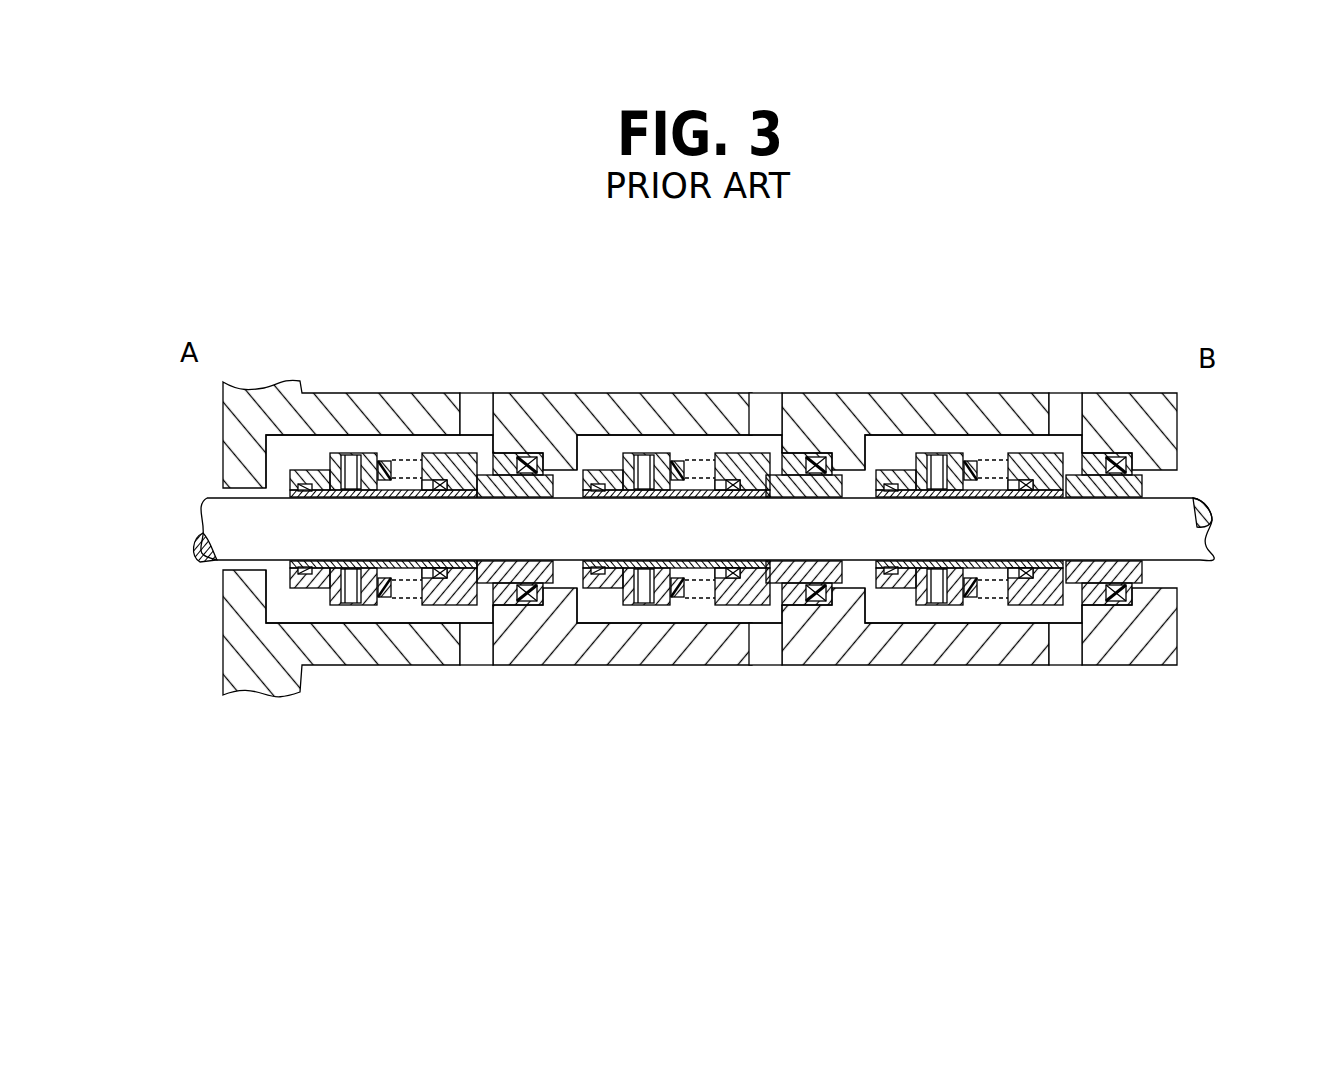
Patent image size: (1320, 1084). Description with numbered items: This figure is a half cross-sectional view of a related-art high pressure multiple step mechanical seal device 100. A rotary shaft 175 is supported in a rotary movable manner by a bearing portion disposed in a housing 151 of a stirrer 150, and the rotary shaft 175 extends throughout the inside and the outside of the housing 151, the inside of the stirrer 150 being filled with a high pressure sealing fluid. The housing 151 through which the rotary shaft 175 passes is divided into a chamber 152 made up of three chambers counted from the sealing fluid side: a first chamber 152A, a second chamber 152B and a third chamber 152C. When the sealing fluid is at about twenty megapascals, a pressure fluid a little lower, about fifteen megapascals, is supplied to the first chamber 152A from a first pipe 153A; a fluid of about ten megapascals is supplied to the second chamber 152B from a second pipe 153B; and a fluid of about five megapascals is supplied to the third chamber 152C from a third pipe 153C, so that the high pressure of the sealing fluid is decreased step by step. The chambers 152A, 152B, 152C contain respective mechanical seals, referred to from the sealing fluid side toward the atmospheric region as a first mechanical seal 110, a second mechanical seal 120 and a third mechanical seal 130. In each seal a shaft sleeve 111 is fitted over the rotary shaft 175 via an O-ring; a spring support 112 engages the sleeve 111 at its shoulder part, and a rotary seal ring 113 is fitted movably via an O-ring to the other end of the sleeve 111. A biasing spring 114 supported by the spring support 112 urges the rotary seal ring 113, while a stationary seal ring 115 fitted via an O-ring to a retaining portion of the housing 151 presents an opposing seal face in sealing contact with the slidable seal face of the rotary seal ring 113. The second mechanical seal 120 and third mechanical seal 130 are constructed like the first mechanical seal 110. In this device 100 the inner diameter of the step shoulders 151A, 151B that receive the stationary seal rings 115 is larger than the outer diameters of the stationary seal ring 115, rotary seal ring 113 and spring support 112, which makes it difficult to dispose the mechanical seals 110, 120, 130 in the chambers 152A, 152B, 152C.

The multiple step mechanical seal device 100 is at (1170, 323).
The first mechanical seal 110 is at (392, 605).
The shaft sleeve 111 is at (300, 586).
The spring support 112 is at (338, 605).
The rotary seal ring 113 is at (447, 605).
The biasing spring 114 is at (383, 458).
The stationary seal ring 115 is at (508, 605).
The second mechanical seal 120 is at (693, 605).
The third mechanical seal 130 is at (990, 600).
The stirrer 150 is at (267, 312).
The housing 151 is at (230, 415).
The step shoulder 151A is at (563, 437).
The step shoulder 151B is at (845, 450).
The chamber 152 is at (877, 607).
The first chamber 152A is at (397, 440).
The second chamber 152B is at (647, 440).
The third chamber 152C is at (933, 443).
The first pipe 153A is at (478, 393).
The second pipe 153B is at (765, 393).
The third pipe 153C is at (1062, 393).
The rotary shaft 175 is at (1183, 502).